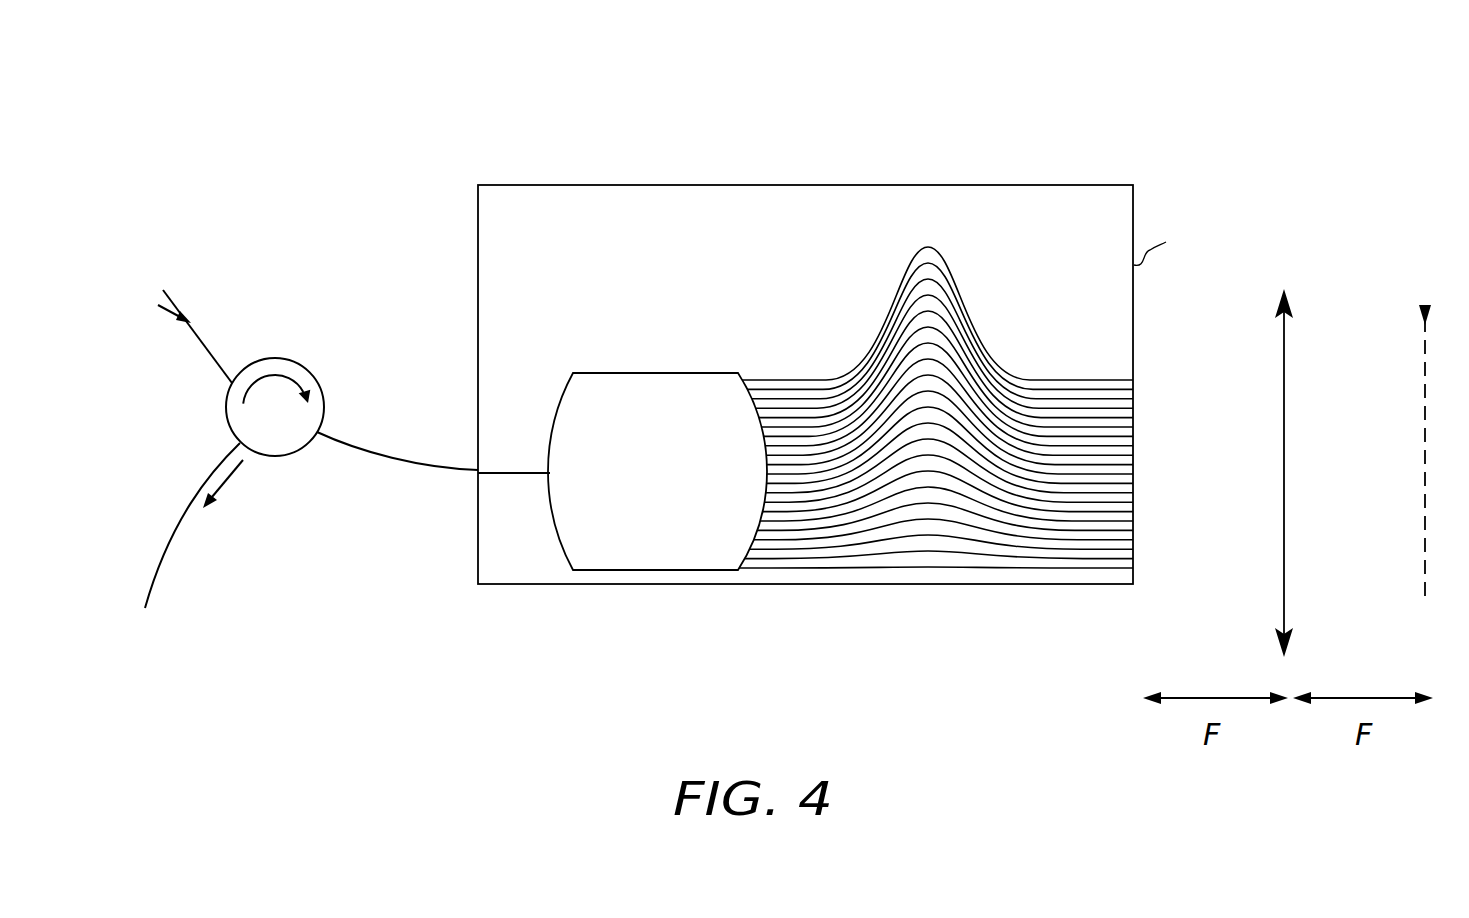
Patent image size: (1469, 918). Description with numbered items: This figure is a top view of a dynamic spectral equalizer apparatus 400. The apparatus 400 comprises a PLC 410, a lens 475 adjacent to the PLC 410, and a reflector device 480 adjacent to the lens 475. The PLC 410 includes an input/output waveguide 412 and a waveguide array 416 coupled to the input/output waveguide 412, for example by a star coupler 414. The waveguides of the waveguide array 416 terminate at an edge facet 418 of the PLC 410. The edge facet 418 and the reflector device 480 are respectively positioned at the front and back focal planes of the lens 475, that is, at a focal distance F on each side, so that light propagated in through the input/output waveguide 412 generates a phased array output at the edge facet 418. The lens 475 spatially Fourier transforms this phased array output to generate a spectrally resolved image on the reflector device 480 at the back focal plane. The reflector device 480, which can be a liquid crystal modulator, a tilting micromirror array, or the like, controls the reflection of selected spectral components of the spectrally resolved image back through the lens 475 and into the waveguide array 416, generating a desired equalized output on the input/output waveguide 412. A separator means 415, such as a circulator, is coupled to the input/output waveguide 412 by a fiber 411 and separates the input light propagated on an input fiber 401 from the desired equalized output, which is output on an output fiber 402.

The dynamic spectral equalizer apparatus 400 is at (395, 141).
The input fiber 401 is at (200, 361).
The output fiber 402 is at (148, 578).
The PLC 410 is at (805, 384).
The optical fiber 411 is at (420, 464).
The input/output waveguide 412 is at (518, 470).
The star coupler 414 is at (657, 372).
The separator means 415 is at (276, 356).
The waveguide array 416 is at (1085, 267).
The edge facet 418 is at (1173, 247).
The lens 475 is at (1294, 302).
The reflector device 480 is at (1429, 306).